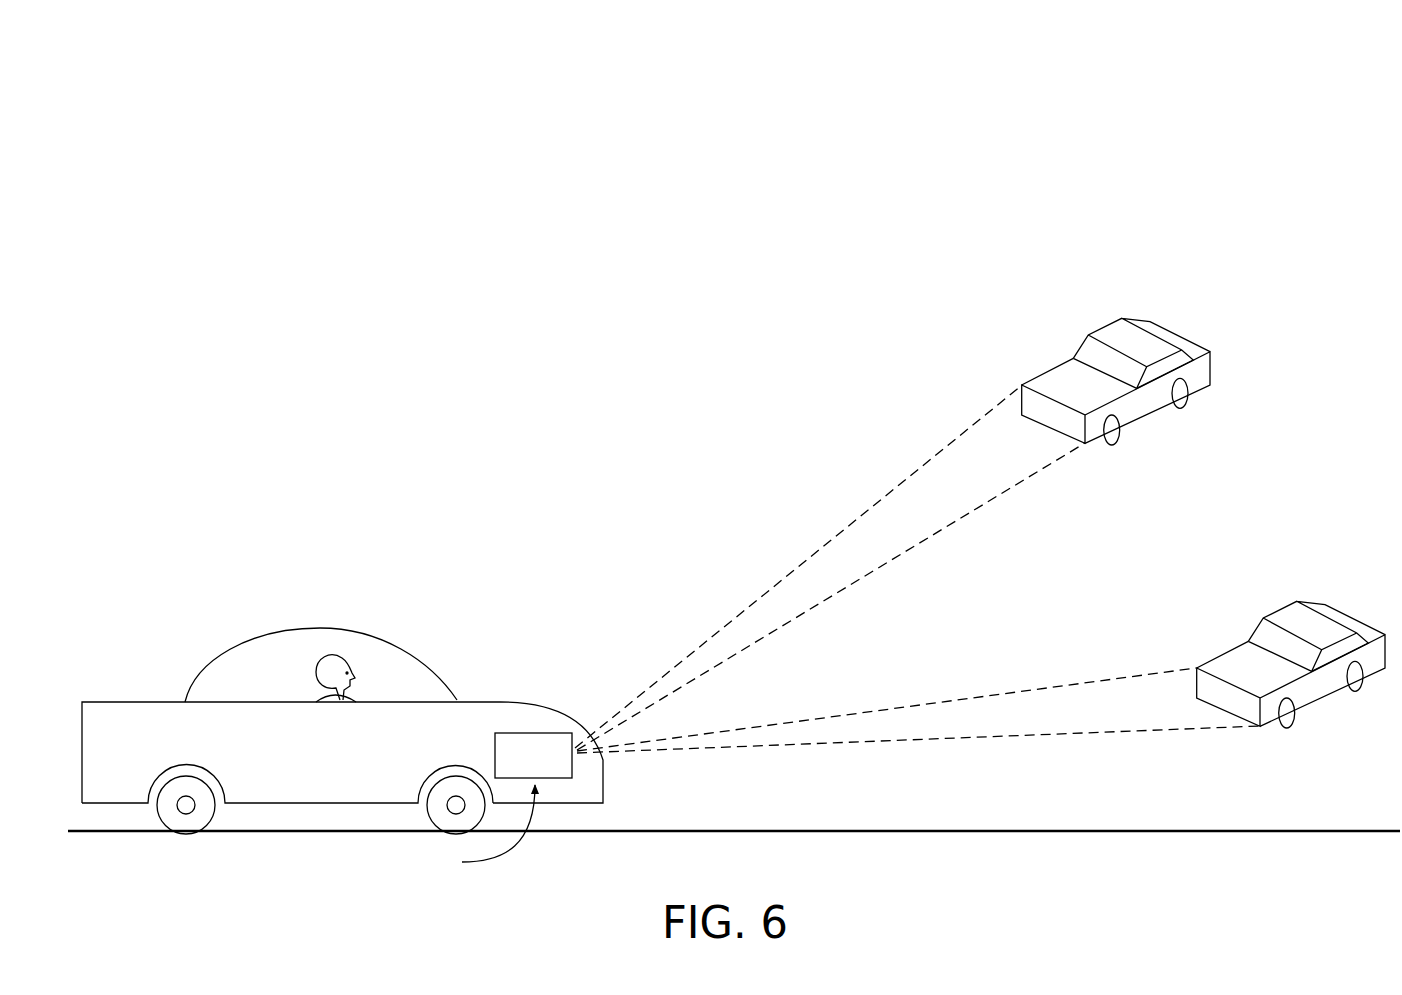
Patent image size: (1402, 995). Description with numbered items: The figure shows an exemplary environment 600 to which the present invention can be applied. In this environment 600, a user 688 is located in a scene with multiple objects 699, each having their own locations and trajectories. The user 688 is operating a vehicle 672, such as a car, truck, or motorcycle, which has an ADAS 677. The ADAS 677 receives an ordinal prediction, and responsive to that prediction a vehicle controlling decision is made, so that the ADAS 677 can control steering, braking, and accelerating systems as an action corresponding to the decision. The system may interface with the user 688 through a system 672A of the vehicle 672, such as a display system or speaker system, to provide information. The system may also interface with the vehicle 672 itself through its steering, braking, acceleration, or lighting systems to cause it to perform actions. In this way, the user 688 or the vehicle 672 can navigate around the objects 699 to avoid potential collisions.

The environment 600 is at (190, 97).
The vehicle 672 is at (357, 757).
The system 672A is at (440, 688).
The user 688 is at (302, 667).
The ADAS 677 is at (553, 765).
The objects 699 is at (1097, 312).